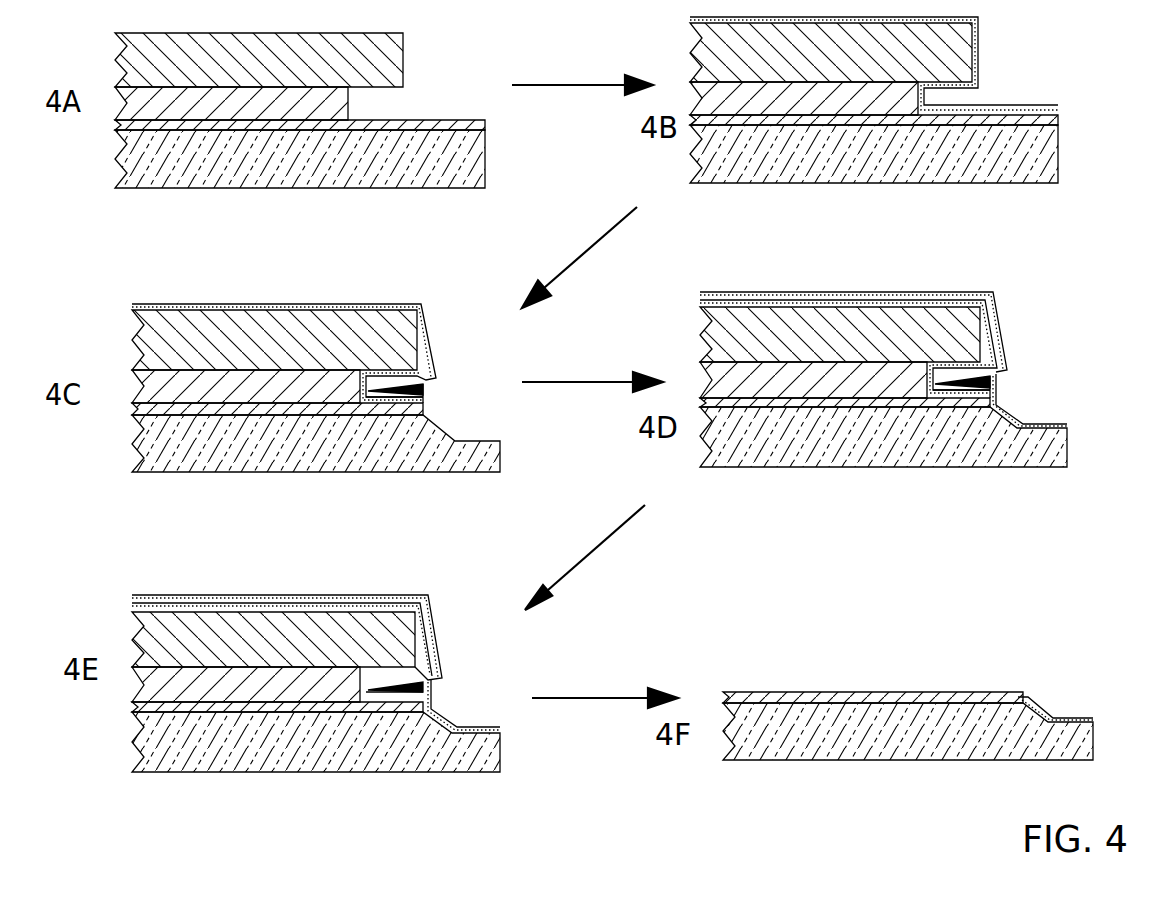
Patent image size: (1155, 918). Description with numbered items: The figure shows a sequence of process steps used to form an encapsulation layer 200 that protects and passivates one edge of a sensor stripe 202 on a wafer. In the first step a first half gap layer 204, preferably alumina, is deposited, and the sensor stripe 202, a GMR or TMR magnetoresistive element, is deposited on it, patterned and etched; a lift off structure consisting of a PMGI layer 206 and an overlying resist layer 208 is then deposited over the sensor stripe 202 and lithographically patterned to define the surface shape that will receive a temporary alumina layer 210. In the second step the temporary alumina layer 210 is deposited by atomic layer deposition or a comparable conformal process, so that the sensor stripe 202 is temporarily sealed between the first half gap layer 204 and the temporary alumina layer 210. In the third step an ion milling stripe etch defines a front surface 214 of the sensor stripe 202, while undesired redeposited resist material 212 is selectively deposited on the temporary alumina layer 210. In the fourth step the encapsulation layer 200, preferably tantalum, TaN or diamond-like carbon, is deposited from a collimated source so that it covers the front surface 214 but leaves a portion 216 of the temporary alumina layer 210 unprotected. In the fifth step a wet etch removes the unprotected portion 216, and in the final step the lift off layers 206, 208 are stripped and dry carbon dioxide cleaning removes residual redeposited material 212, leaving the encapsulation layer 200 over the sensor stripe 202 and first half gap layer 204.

The encapsulation layer 200 is at (1005, 372).
The sensor stripe 202 is at (404, 138).
The first half gap layer 204 is at (192, 175).
The PMGI layer 206 is at (262, 100).
The resist layer 208 is at (192, 74).
The temporary alumina layer 210 is at (1001, 104).
The redeposited resist material 212 is at (430, 390).
The front surface 214 is at (425, 405).
The unprotected portion 216 is at (963, 350).